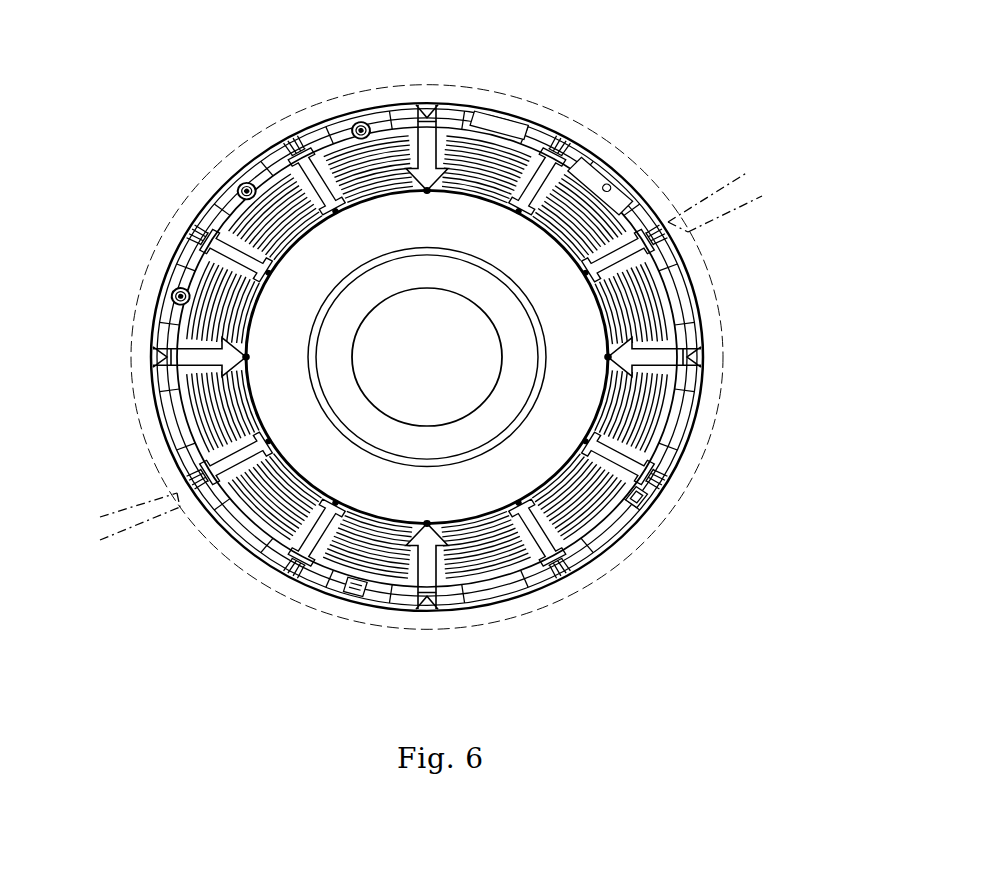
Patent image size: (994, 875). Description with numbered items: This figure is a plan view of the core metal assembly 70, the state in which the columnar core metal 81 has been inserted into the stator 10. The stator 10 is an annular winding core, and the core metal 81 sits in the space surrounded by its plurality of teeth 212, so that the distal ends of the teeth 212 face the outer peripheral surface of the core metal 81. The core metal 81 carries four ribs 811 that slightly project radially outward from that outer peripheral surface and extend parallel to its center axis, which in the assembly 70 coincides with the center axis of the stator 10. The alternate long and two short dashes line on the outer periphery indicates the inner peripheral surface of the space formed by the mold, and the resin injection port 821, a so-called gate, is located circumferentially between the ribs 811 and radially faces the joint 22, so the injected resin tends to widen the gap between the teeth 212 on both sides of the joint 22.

The core metal assembly 70 is at (164, 129).
The stator 10 is at (545, 125).
The joint 22 is at (272, 575).
The ribs 811 is at (427, 170).
The resin injection port 821 is at (678, 220).
The core metal 81 is at (356, 318).
The teeth 212 is at (670, 412).